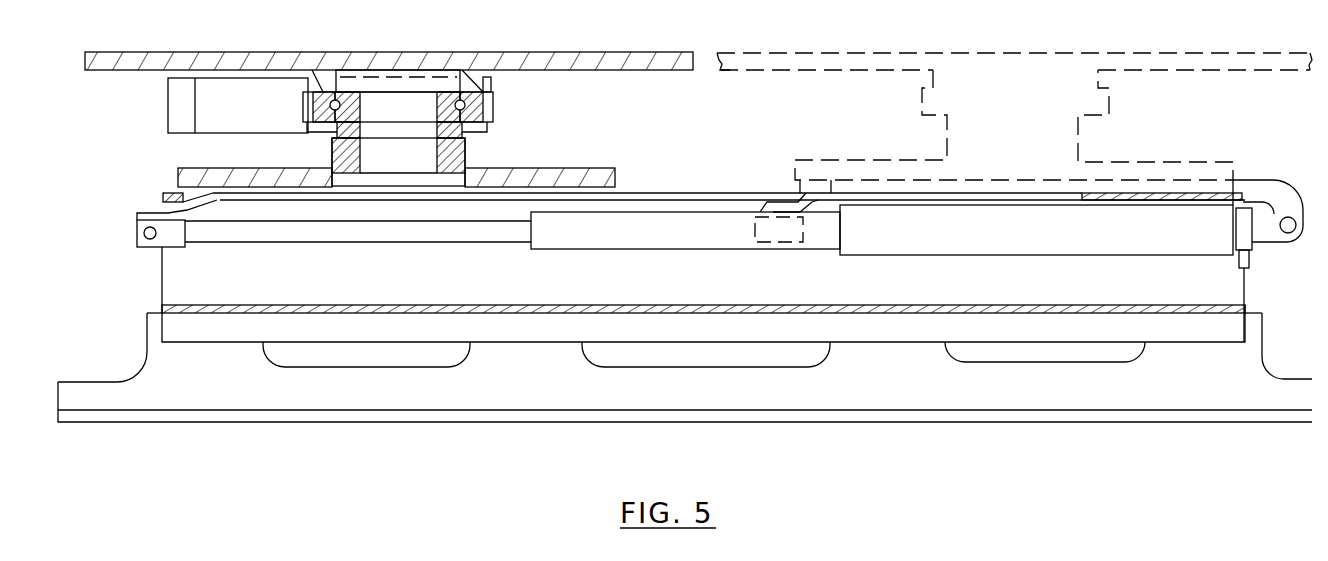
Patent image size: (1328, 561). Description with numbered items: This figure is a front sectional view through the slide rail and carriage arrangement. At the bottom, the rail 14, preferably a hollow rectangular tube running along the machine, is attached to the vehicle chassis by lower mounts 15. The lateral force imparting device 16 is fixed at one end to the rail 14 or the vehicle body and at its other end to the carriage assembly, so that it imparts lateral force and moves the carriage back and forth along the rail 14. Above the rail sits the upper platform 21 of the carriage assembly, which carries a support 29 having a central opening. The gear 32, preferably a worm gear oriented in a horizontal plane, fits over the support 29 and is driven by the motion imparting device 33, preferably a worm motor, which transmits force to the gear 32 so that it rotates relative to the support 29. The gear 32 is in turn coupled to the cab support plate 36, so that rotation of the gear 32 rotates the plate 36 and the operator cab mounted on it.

The rail 14 is at (1220, 282).
The lower mounts 15 is at (920, 378).
The lateral force imparting device 16 is at (1122, 225).
The upper platform 21 is at (555, 173).
The support 29 is at (457, 147).
The gear 32 is at (488, 105).
The motion imparting device 33 is at (183, 107).
The cab support plate 36 is at (583, 62).